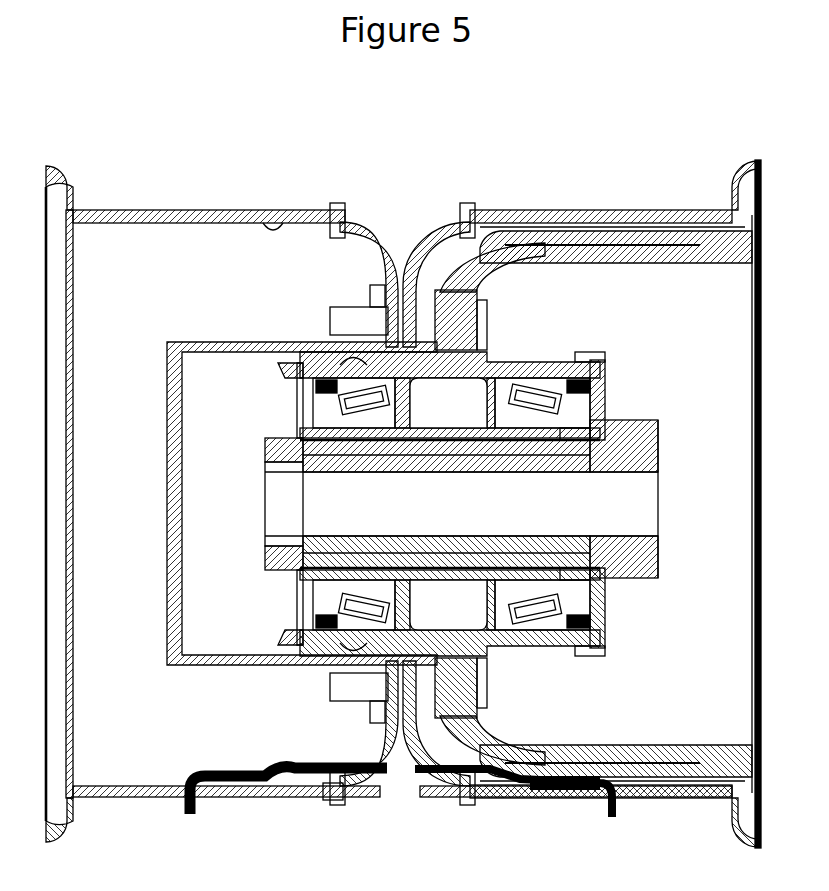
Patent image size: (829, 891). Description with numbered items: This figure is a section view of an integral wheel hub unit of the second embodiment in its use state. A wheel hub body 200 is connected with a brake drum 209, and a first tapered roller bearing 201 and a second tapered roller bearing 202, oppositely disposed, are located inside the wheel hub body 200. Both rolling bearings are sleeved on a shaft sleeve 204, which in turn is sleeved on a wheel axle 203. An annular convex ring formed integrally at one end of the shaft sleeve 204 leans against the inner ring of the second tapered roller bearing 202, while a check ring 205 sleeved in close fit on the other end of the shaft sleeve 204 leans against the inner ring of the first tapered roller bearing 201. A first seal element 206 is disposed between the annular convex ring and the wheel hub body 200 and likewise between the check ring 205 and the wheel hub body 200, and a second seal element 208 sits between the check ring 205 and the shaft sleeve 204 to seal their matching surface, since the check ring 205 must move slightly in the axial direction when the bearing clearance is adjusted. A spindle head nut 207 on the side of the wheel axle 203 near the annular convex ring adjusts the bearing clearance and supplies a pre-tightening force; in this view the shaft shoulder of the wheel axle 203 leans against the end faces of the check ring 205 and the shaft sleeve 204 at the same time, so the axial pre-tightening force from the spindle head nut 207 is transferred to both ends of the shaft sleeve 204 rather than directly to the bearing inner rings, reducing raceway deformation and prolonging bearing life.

The wheel hub body 200 is at (493, 352).
The first tapered roller bearing 201 is at (555, 355).
The second tapered roller bearing 202 is at (418, 404).
The wheel axle 203 is at (650, 585).
The shaft sleeve 204 is at (450, 585).
The check ring 205 is at (603, 400).
The first seal element 206 is at (612, 655).
The spindle head nut 207 is at (272, 437).
The second seal element 208 is at (575, 440).
The brake drum 209 is at (658, 231).